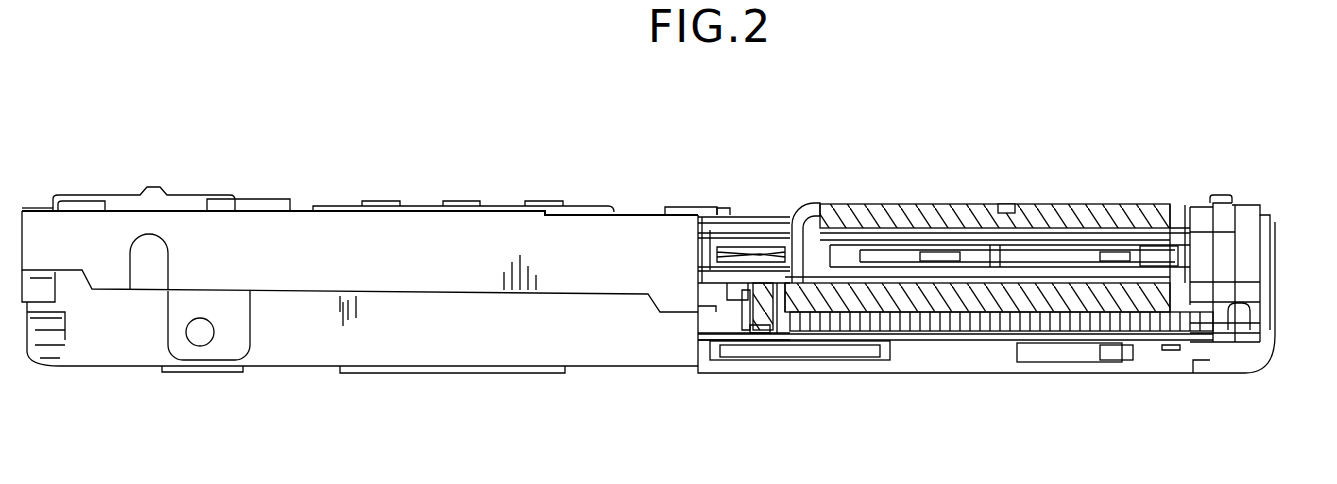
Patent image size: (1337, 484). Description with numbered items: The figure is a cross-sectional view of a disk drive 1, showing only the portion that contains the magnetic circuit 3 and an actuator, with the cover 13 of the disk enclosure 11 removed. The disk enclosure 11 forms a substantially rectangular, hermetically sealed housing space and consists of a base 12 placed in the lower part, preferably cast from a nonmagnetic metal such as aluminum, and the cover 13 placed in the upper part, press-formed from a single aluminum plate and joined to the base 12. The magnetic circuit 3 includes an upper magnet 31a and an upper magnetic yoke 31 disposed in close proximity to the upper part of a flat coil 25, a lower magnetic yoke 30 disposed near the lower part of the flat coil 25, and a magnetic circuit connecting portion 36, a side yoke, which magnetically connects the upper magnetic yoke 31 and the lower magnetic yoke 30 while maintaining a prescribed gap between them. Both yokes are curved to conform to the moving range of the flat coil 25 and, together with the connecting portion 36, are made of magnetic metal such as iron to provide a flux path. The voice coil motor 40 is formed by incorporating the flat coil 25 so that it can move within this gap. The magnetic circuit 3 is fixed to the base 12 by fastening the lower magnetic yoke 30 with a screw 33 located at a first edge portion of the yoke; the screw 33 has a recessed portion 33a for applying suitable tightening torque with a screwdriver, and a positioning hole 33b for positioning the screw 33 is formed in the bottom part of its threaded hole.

The disk drive 1 is at (250, 136).
The magnetic circuit 3 is at (802, 210).
The disk enclosure 11 is at (133, 368).
The base 12 is at (952, 332).
The cover 13 is at (300, 236).
The flat coil 25 is at (1110, 258).
The lower magnetic yoke 30 is at (1147, 280).
The upper magnetic yoke 31 is at (905, 215).
The upper magnet 31a is at (1077, 238).
The screw 33 is at (742, 320).
The recessed portion 33a is at (735, 272).
The positioning hole 33b is at (770, 333).
The magnetic circuit connecting portion 36 is at (788, 232).
The voice coil motor 40 is at (1196, 257).